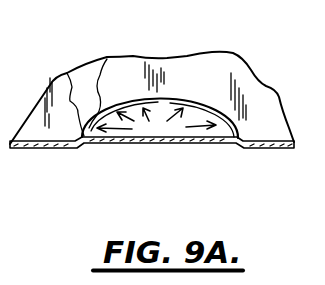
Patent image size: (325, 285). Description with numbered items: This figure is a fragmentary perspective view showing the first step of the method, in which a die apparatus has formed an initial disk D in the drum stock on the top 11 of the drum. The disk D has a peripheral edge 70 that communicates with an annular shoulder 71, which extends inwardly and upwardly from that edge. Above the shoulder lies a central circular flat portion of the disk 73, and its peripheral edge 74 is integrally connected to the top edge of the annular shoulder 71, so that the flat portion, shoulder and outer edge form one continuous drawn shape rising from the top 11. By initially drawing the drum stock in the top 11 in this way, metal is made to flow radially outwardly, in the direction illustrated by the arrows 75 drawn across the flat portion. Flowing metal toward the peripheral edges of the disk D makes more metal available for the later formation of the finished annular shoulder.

The top of the drum 11 is at (249, 88).
The peripheral edge of the disk 70 is at (107, 60).
The annular shoulder 71 is at (67, 73).
The central circular flat portion of the disk 73 is at (165, 110).
The peripheral edge of the central flat portion 74 is at (97, 135).
The arrows 75 is at (125, 130).
The initial disk D is at (160, 128).